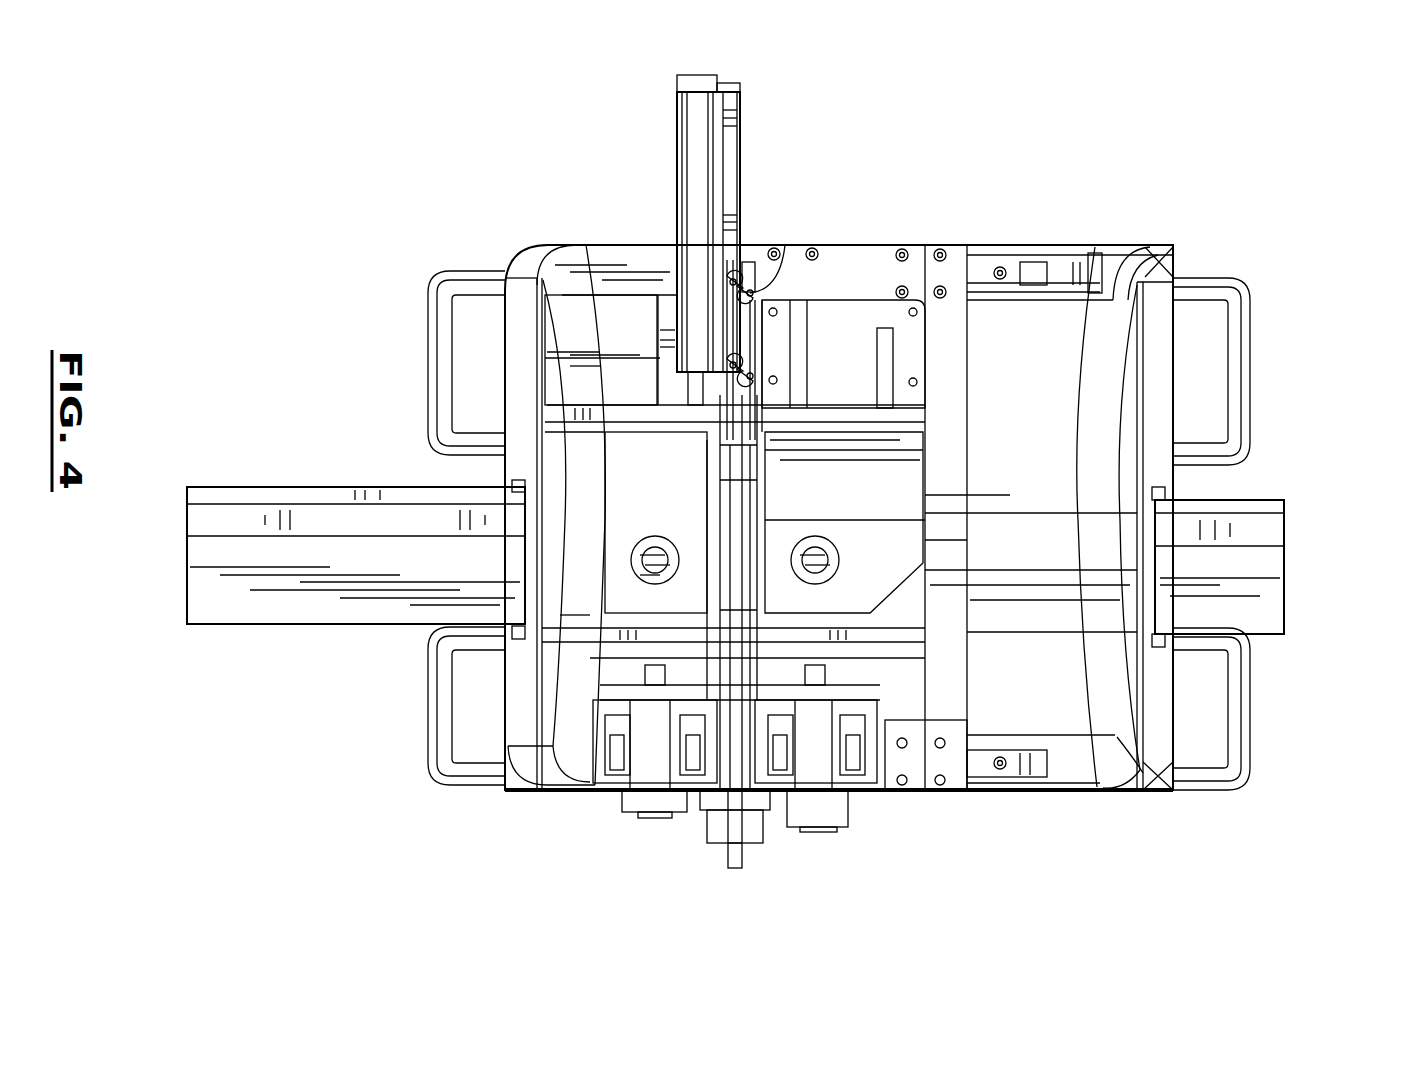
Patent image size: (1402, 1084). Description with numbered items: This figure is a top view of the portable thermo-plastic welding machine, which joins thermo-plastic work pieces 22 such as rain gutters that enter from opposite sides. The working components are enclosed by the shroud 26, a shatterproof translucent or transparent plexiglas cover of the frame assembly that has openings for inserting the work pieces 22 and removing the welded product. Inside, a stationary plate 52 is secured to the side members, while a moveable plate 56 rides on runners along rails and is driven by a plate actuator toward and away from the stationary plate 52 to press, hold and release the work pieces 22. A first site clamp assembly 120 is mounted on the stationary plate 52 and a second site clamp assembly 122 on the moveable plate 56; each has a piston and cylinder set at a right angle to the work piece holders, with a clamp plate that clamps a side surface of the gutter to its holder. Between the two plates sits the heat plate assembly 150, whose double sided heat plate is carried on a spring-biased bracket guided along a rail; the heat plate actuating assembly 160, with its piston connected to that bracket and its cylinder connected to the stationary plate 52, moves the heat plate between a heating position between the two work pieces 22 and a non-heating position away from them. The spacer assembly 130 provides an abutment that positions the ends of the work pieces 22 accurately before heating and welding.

The work pieces 22 is at (330, 555).
The shroud 26 is at (1034, 327).
The stationary plate 52 is at (653, 275).
The moveable plate 56 is at (430, 300).
The first site clamp assembly 120 is at (655, 818).
The second site clamp assembly 122 is at (822, 832).
The spacer assembly 130 is at (748, 838).
The heat plate assembly 150 is at (750, 290).
The heat plate actuating assembly 160 is at (677, 140).